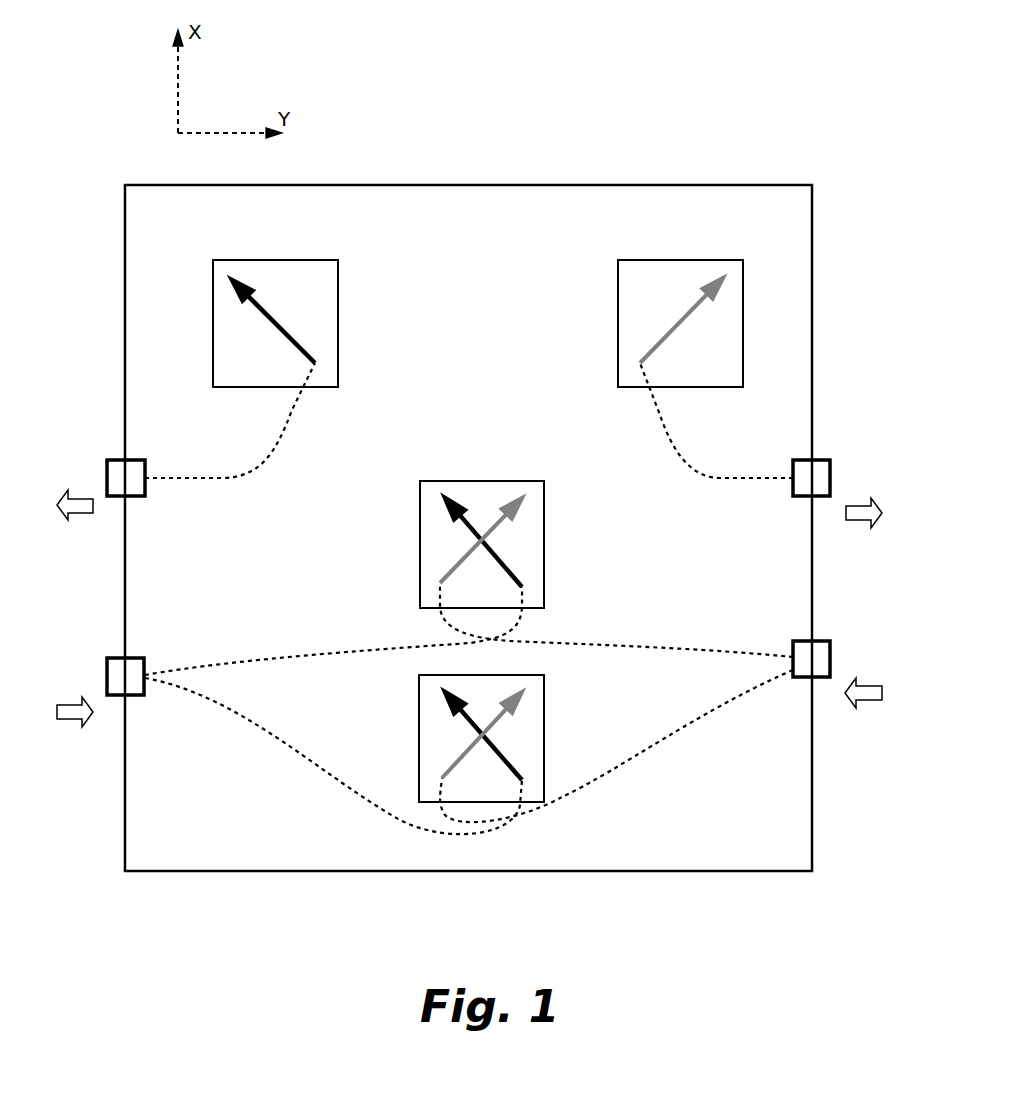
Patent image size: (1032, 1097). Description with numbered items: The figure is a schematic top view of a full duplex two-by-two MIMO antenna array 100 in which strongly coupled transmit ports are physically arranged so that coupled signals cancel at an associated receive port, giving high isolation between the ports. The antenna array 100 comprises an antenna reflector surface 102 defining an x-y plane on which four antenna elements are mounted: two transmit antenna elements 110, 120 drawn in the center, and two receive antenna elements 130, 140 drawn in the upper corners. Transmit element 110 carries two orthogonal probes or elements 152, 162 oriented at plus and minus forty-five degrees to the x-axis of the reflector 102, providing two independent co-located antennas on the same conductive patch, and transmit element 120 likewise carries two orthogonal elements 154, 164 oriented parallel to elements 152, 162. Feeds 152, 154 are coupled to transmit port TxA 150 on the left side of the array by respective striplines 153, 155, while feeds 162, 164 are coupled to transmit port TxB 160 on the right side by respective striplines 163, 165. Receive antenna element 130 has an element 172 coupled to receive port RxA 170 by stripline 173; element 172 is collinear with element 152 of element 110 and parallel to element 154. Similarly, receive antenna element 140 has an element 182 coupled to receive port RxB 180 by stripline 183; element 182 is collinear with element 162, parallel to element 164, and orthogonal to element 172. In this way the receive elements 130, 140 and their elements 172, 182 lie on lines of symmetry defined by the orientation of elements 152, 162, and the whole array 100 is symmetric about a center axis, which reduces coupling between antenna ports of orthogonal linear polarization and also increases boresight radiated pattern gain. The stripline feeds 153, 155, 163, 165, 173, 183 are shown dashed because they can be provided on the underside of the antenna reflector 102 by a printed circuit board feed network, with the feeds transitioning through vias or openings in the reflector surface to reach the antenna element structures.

The MIMO antenna array 100 is at (552, 120).
The antenna reflector surface 102 is at (692, 185).
The transmit antenna element 110 is at (420, 553).
The transmit antenna element 120 is at (420, 748).
The Rx antenna element 130 is at (230, 258).
The Rx antenna element 140 is at (636, 258).
The transmit port TxA 150 is at (125, 658).
The element (feed) 152 is at (455, 512).
The stripline 153 is at (290, 660).
The element (feed) 154 is at (450, 708).
The stripline 155 is at (300, 742).
The transmit port TxB 160 is at (812, 641).
The element (feed) 162 is at (515, 515).
The stripline 163 is at (680, 646).
The element (feed) 164 is at (515, 708).
The stripline 165 is at (672, 728).
The receive port RxA 170 is at (125, 460).
The element 172 is at (300, 345).
The stripline 173 is at (240, 468).
The receive port RxB 180 is at (812, 460).
The element 182 is at (655, 345).
The stripline 183 is at (705, 468).